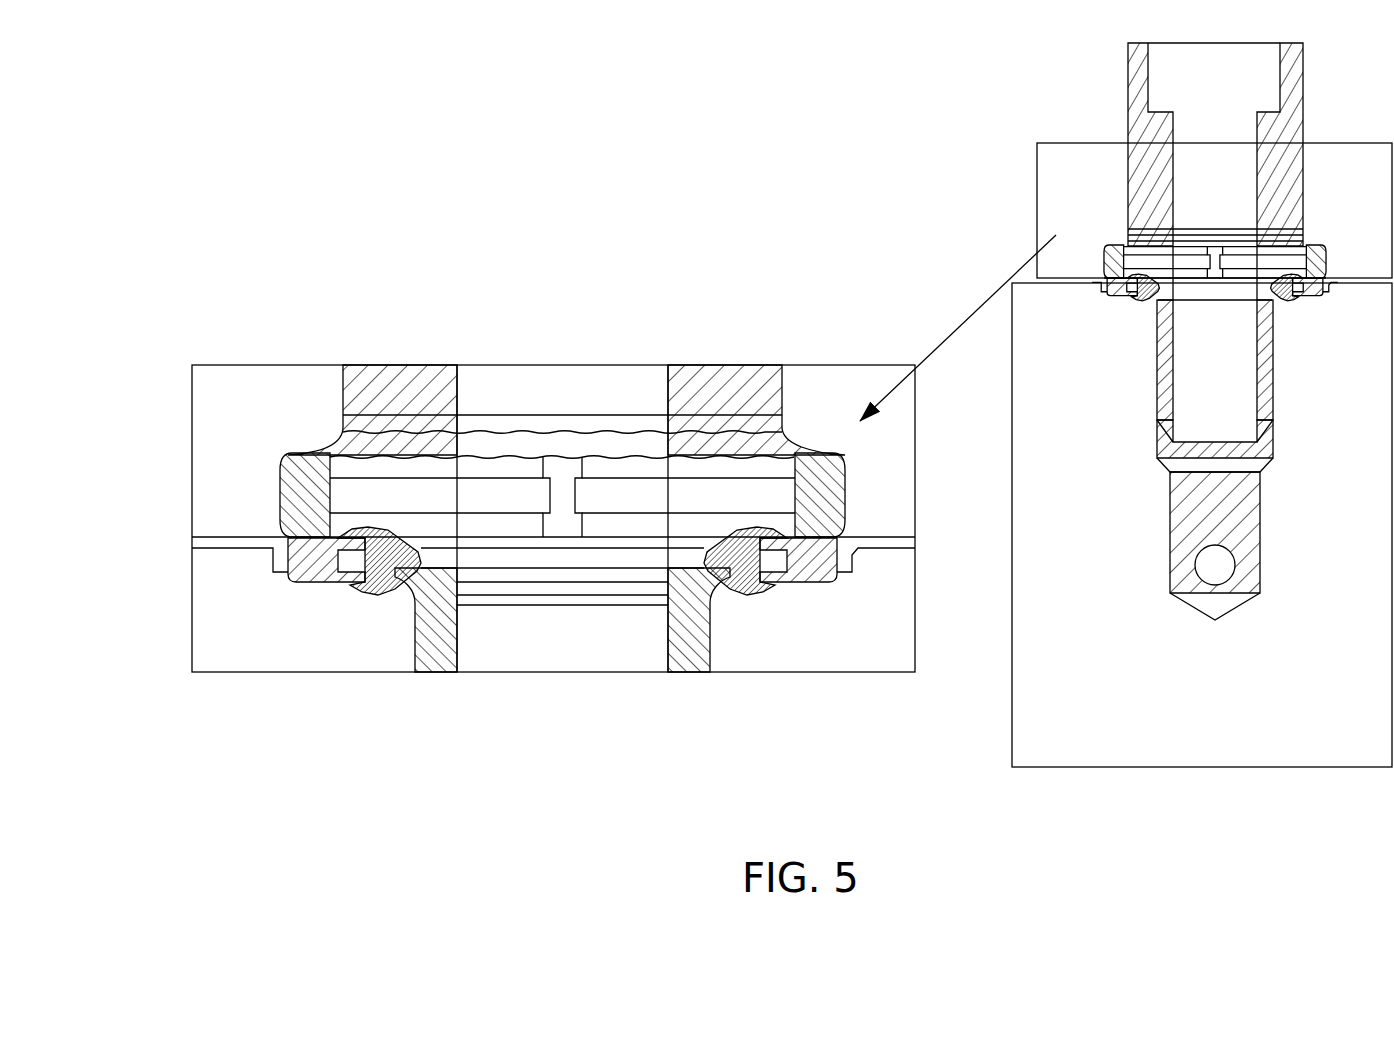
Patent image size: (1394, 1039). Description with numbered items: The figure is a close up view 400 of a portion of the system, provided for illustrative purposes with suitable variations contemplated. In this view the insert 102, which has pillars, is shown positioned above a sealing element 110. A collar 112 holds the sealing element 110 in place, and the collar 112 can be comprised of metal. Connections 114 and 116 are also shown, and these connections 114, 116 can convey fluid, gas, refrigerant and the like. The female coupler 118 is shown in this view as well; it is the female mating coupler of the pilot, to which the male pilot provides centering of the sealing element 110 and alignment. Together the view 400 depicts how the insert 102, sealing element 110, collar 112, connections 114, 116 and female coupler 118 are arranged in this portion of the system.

The close up view 400 is at (220, 195).
The insert 102 is at (275, 509).
The sealing element 110 is at (348, 591).
The collar 112 is at (286, 576).
The connection 114 is at (341, 400).
The connection 116 is at (416, 645).
The female coupler 118 is at (1043, 710).